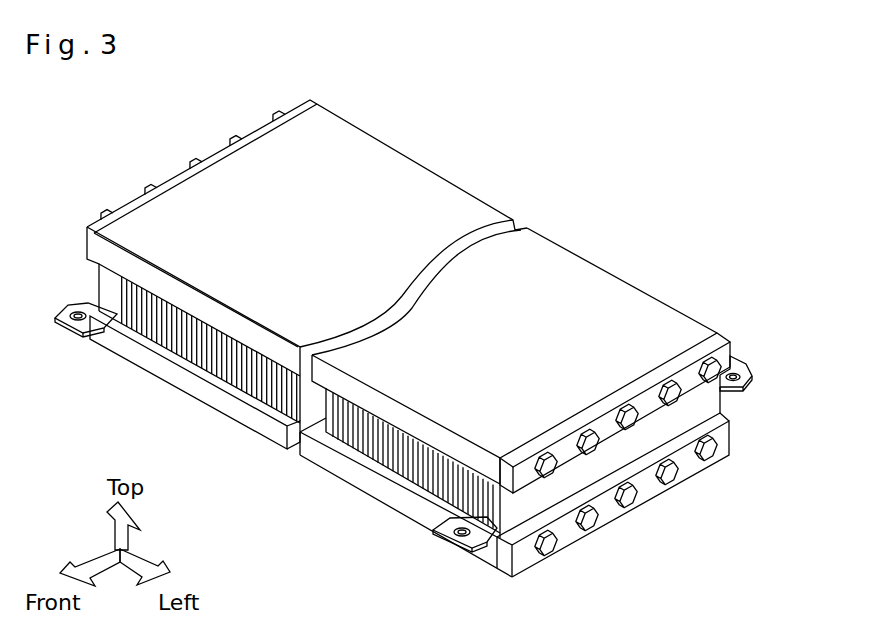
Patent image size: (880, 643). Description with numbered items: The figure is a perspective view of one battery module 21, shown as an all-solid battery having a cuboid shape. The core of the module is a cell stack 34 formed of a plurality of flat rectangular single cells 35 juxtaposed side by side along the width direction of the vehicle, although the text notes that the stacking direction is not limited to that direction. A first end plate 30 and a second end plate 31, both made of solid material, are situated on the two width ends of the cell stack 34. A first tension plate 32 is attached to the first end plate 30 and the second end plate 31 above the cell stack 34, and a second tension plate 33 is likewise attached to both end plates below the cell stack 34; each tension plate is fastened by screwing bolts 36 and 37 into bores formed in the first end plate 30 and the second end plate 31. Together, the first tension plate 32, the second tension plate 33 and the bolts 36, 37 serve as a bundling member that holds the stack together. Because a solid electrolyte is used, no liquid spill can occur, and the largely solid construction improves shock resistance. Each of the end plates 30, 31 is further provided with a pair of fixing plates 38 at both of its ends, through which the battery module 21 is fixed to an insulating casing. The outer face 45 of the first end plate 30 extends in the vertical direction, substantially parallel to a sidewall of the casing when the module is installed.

The battery module 21 is at (436, 152).
The first end plate 30 is at (612, 514).
The second end plate 31 is at (181, 172).
The first tension plate 32 is at (608, 280).
The second tension plate 33 is at (378, 490).
The cell stack 34 is at (180, 348).
The single cells 35 is at (282, 416).
The bolts 36 is at (706, 456).
The bolts 37 is at (109, 208).
The fixing plates 38 is at (66, 304).
The outer face of the first end plate 45 is at (731, 352).